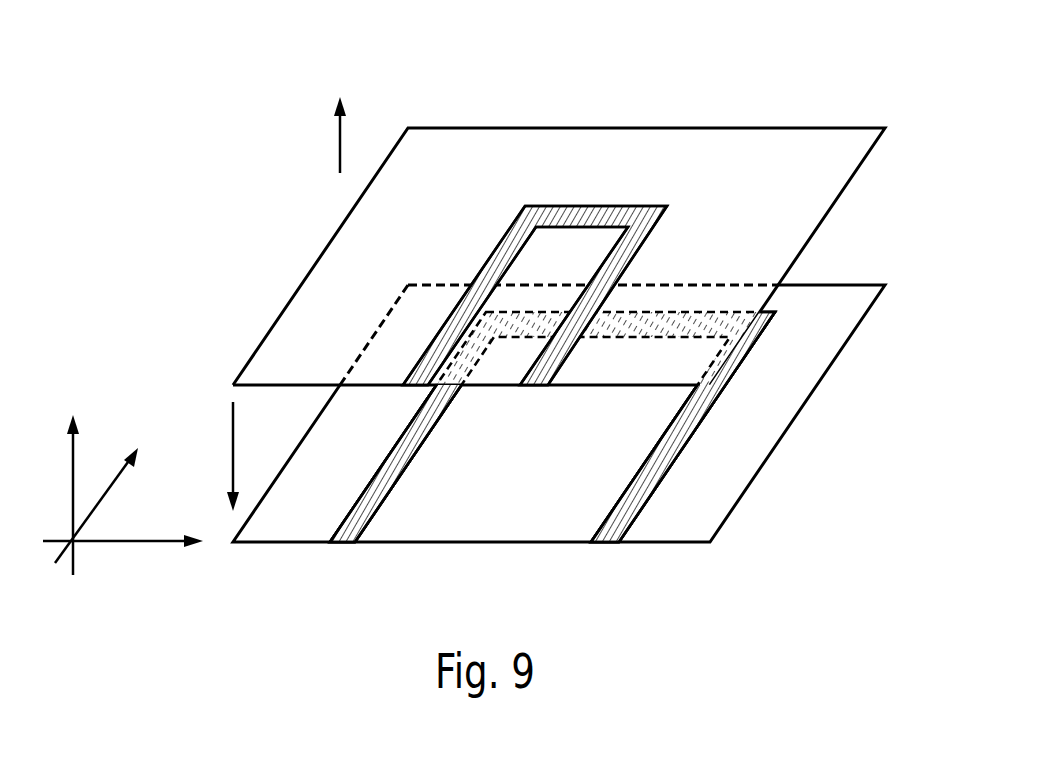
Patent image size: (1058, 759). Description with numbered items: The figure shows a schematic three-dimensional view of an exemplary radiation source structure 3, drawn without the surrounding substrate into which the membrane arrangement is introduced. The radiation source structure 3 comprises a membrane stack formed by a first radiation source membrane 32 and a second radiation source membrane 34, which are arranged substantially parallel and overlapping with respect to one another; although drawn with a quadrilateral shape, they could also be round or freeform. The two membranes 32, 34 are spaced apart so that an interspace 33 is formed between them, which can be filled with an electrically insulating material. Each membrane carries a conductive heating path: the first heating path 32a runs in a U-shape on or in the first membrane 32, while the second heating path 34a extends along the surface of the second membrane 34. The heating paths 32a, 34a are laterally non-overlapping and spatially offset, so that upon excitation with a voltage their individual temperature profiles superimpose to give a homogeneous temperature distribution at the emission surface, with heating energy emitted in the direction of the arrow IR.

The radiation source structure 3 is at (960, 39).
The first radiation source membrane 32 is at (865, 163).
The first heating path 32a is at (585, 206).
The interspace 33 is at (884, 239).
The second radiation source membrane 34 is at (825, 375).
The second heating path 34a is at (648, 453).